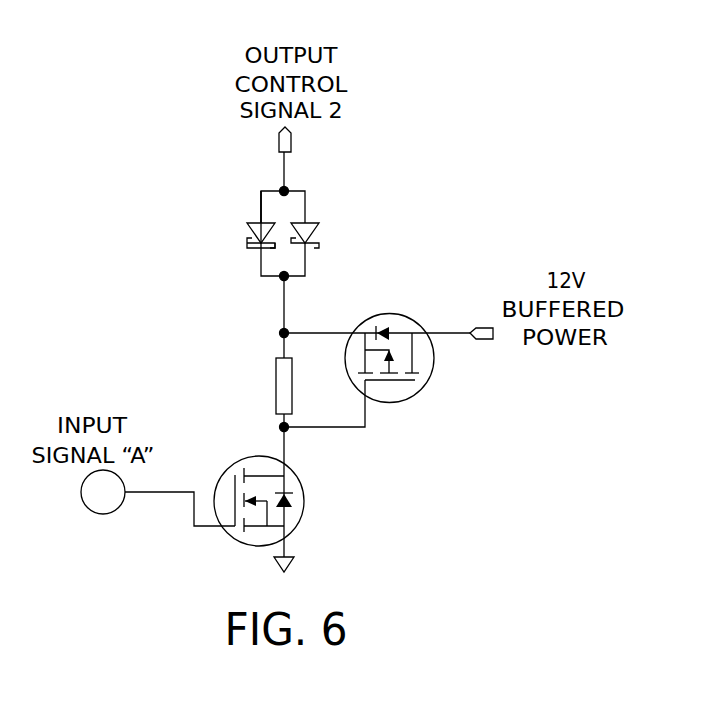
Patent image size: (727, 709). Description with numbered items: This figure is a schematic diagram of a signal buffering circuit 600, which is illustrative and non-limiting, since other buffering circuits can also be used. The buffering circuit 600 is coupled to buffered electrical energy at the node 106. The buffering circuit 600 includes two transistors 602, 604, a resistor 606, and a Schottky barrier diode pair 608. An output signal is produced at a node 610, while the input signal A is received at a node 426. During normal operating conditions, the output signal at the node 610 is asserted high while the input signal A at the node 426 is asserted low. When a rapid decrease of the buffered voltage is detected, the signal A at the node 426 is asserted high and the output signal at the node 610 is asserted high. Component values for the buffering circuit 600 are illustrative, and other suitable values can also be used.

The signal buffering circuit 600 is at (465, 110).
The node 610 is at (278, 135).
The Schottky barrier diode pair 608 is at (349, 232).
The resistor 606 is at (276, 362).
The transistor 604 is at (403, 405).
The node 106 is at (480, 340).
The transistor 602 is at (300, 483).
The node 426 is at (80, 493).